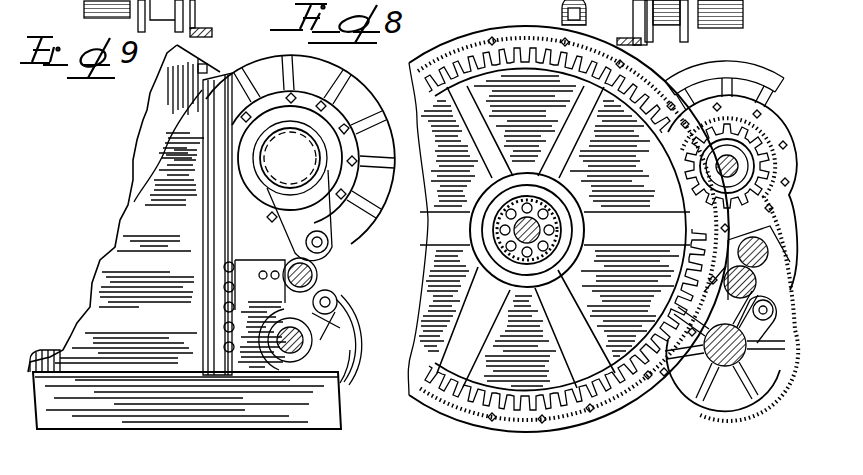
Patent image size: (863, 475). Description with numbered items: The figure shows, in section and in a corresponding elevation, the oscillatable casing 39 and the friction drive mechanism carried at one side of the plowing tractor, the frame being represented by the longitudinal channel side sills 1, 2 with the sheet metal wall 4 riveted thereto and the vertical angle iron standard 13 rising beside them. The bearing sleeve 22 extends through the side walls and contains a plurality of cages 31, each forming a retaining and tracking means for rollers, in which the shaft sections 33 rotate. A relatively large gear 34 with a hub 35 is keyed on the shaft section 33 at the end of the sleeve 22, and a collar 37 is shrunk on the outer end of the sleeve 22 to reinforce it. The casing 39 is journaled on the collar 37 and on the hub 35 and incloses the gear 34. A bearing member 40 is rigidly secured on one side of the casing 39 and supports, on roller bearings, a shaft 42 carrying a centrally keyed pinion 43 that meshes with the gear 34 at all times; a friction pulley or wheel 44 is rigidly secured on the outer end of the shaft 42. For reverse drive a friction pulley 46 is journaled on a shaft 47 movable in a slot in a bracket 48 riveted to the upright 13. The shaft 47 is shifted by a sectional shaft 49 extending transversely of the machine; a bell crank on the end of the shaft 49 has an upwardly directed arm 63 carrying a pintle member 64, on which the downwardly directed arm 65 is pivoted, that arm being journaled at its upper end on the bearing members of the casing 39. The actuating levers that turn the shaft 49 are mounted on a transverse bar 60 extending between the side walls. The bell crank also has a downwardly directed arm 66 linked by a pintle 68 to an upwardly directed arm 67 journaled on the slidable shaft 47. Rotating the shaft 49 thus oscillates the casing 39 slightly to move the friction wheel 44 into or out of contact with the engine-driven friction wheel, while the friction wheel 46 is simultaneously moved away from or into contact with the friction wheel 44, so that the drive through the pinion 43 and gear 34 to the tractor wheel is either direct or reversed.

In FIG. 9, the longitudinal channel side sill 1 is at (190, 30).
In FIG. 9, the longitudinal channel side sill 2 is at (330, 384).
In FIG. 8, the longitudinal channel side sill 2 is at (636, 16).
In FIG. 9, the sheet metal wall 4 is at (135, 262).
In FIG. 9, the vertical angle iron standard 13 is at (244, 224).
In FIG. 8, the bearing sleeve 22 is at (553, 254).
In FIG. 8, the cage 31 is at (558, 224).
In FIG. 8, the shaft section 33 is at (513, 262).
In FIG. 8, the gear 34 is at (486, 404).
In FIG. 8, the hub 35 is at (548, 190).
In FIG. 8, the collar 37 is at (493, 230).
In FIG. 9, the oscillatable casing 39 is at (153, 208).
In FIG. 8, the oscillatable casing 39 is at (606, 410).
In FIG. 9, the bearing member 40 is at (290, 158).
In FIG. 8, the shaft 42 is at (712, 166).
In FIG. 8, the pinion 43 is at (702, 186).
In FIG. 9, the friction pulley or wheel 44 is at (370, 93).
In FIG. 8, the friction pulley or wheel 44 is at (758, 72).
In FIG. 9, the friction pulley 46 is at (356, 323).
In FIG. 8, the friction pulley 46 is at (752, 406).
In FIG. 9, the shaft 47 is at (327, 278).
In FIG. 8, the shaft 47 is at (727, 367).
In FIG. 9, the bracket 48 is at (275, 308).
In FIG. 8, the sectional shaft 49 is at (758, 284).
In FIG. 8, the transverse bar 60 is at (700, 296).
In FIG. 9, the upwardly directed arm 63 is at (320, 272).
In FIG. 8, the upwardly directed arm 63 is at (758, 276).
In FIG. 9, the pintle member 64 is at (333, 250).
In FIG. 8, the pintle member 64 is at (722, 254).
In FIG. 9, the downwardly directed arm 65 is at (299, 215).
In FIG. 8, the downwardly directed arm 65 is at (768, 238).
In FIG. 9, the downwardly directed arm 66 is at (338, 293).
In FIG. 9, the upwardly directed arm 67 is at (357, 346).
In FIG. 8, the upwardly directed arm 67 is at (763, 369).
In FIG. 8, the pintle 68 is at (756, 319).